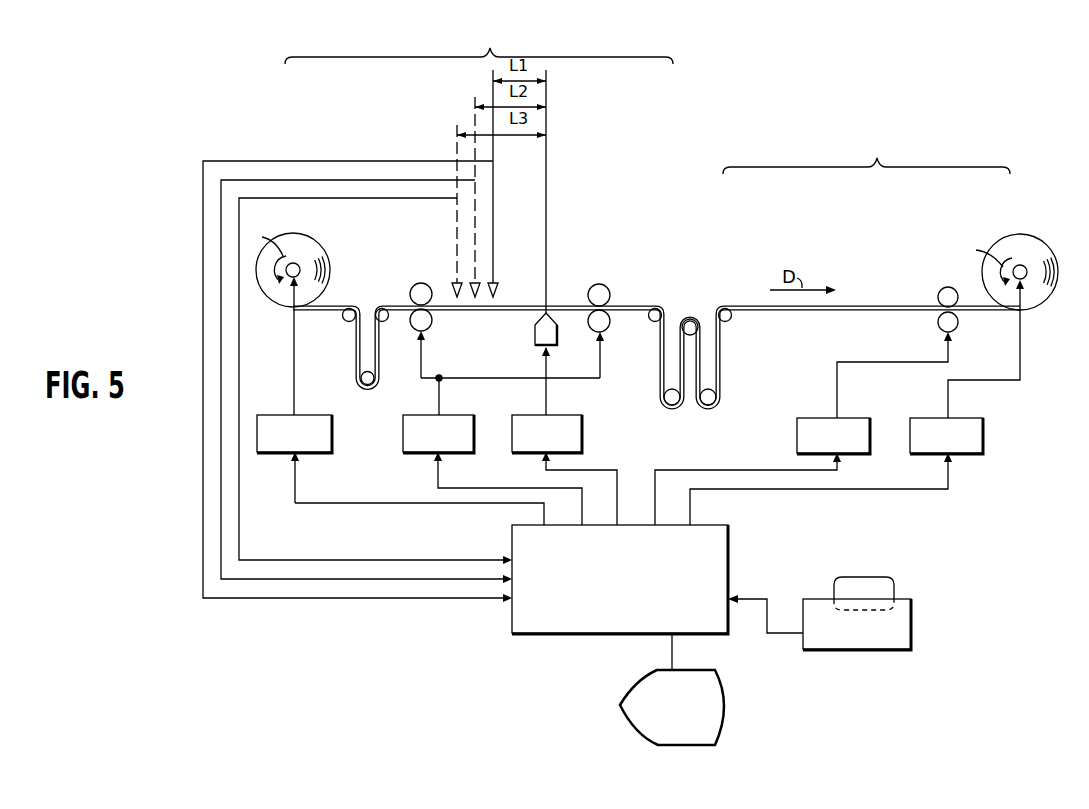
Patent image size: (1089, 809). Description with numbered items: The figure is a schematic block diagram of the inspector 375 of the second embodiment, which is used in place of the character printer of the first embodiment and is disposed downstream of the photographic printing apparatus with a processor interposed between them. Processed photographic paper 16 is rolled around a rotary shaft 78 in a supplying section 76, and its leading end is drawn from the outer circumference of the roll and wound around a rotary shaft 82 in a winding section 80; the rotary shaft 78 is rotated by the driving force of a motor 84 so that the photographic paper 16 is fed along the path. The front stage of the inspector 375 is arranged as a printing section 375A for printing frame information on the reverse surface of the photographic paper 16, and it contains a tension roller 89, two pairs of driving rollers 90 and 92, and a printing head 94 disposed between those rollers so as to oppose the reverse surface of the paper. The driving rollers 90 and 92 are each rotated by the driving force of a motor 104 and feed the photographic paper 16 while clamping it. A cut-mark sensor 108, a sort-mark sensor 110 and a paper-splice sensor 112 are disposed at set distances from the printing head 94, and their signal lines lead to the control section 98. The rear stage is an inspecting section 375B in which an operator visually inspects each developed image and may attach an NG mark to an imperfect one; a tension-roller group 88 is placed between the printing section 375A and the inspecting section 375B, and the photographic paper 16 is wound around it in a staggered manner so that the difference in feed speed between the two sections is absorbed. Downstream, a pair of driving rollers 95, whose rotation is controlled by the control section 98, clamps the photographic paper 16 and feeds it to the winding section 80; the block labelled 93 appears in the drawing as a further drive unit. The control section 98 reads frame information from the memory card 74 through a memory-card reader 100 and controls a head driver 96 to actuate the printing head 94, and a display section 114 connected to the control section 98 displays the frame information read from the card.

The inspector 375 is at (216, 113).
The printing section 375A is at (479, 42).
The inspecting section 375B is at (866, 156).
The photographic paper 16 is at (403, 303).
The memory card 74 is at (880, 580).
The supplying section 76 is at (262, 299).
The rotary shaft 78 is at (301, 268).
The winding section 80 is at (1003, 230).
The rotary shaft 82 is at (1027, 266).
The motor 84 is at (306, 414).
The tension-roller group 88 is at (703, 289).
The tension roller 89 is at (373, 389).
The driving rollers 90 is at (416, 281).
The driving rollers 92 is at (613, 264).
The drive motor 93 is at (848, 417).
The printing head 94 is at (537, 332).
The driving rollers 95 is at (934, 296).
The head driver 96 is at (563, 414).
The control section 98 is at (730, 556).
The memory-card reader 100 is at (868, 640).
The motor 104 is at (461, 414).
The cut-mark sensor 108 is at (455, 281).
The sort-mark sensor 110 is at (478, 279).
The paper-splice sensor 112 is at (497, 289).
The display section 114 is at (625, 716).